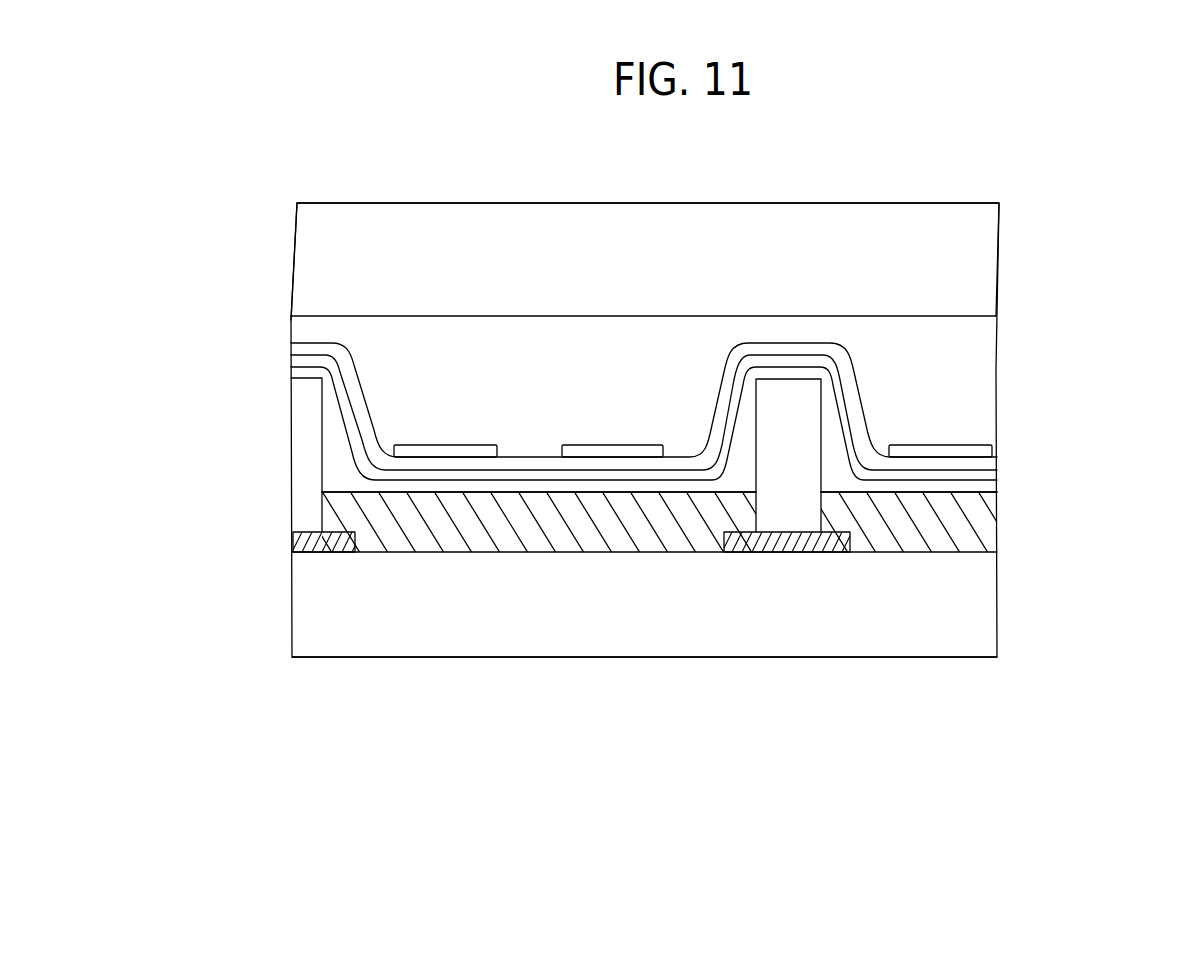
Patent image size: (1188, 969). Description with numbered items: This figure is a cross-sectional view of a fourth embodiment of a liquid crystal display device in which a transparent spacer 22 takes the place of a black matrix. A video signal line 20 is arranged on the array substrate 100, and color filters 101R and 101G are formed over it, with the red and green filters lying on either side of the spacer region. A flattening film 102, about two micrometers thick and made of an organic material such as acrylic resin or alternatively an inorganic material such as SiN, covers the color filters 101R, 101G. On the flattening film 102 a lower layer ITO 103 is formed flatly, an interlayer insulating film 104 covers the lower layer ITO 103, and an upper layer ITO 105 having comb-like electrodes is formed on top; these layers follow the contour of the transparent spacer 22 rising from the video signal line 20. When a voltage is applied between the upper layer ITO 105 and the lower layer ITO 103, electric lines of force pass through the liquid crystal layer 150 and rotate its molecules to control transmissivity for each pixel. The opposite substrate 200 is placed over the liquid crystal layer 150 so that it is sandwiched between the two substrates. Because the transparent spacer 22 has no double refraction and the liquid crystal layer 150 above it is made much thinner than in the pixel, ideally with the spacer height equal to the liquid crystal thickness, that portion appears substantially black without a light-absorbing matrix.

The opposite substrate 200 is at (967, 265).
The liquid crystal layer 150 is at (967, 347).
The upper layer ITO 105 is at (448, 445).
The interlayer insulating film 104 is at (997, 458).
The lower layer ITO 103 is at (997, 470).
The flattening film 102 is at (997, 487).
The color filter 101R is at (510, 527).
The color filter 101G is at (938, 525).
The array substrate 100 is at (970, 608).
The video signal line 20 is at (762, 550).
The transparent spacer 22 is at (790, 510).